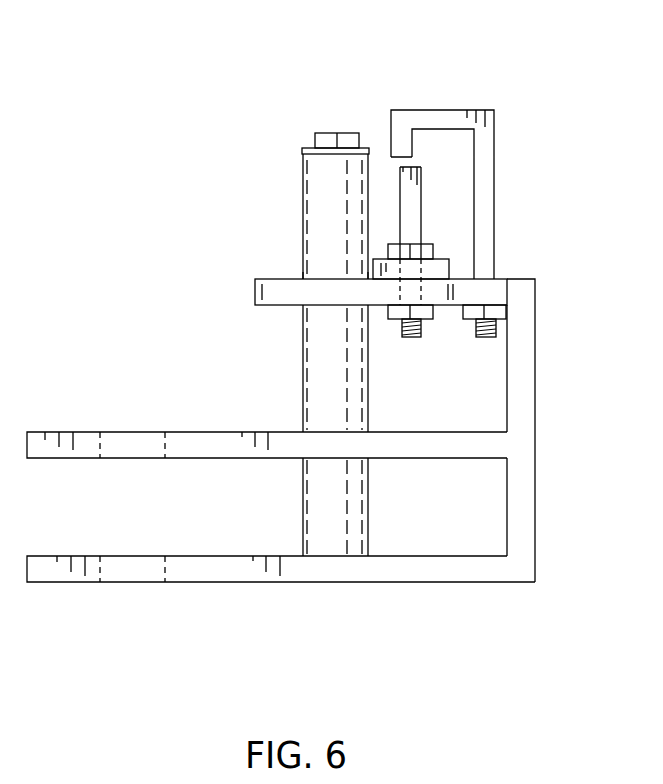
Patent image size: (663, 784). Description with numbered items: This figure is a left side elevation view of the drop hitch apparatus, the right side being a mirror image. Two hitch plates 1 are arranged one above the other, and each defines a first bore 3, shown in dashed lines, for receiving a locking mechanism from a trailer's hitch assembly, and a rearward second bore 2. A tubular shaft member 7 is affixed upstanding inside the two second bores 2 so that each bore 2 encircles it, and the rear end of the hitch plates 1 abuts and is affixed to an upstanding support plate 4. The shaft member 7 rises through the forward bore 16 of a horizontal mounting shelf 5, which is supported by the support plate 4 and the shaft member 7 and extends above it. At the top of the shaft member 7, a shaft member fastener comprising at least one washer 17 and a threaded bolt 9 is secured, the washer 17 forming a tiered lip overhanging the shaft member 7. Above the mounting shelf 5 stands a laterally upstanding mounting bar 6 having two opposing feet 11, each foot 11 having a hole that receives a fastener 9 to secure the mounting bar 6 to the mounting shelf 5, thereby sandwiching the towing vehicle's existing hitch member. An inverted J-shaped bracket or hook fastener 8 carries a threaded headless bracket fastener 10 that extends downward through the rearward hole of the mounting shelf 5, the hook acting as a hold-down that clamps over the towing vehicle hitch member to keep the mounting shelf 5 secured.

The hitch plate 1 is at (183, 458).
The rearward second bore 2 is at (303, 432).
The first bore 3 is at (118, 442).
The upstanding support plate 4 is at (535, 532).
The mounting shelf 5 is at (257, 288).
The mounting bar 6 is at (420, 196).
The tubular shaft member 7 is at (303, 188).
The bracket or hook fastener 8 is at (438, 110).
The fastener 9 is at (327, 133).
The bracket fastener 10 is at (497, 332).
The foot 11 is at (450, 263).
The forward bore 16 is at (303, 277).
The washer 17 is at (303, 148).